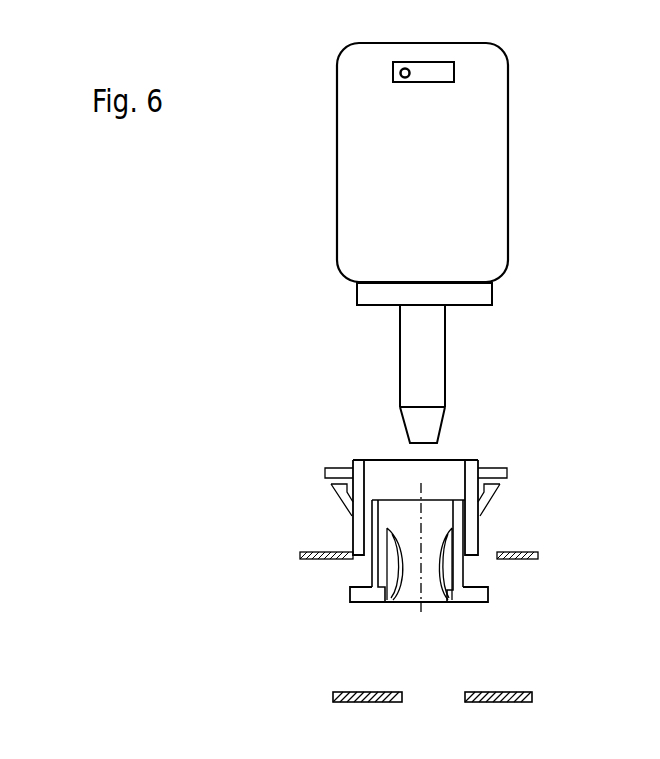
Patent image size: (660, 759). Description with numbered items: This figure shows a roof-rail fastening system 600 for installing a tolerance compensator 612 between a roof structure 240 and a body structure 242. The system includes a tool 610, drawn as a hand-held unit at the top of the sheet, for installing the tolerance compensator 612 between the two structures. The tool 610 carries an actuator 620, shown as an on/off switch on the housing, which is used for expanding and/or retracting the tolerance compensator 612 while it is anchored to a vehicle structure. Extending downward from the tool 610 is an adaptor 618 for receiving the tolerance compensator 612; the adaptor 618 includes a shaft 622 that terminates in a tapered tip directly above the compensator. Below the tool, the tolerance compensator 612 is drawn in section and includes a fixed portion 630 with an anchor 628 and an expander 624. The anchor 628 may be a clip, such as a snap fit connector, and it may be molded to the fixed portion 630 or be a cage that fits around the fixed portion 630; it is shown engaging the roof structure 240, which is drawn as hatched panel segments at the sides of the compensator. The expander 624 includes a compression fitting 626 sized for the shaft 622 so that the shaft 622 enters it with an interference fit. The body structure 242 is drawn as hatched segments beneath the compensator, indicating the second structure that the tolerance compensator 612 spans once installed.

The system for installing a tolerance compensator 600 is at (205, 224).
The tool 610 is at (485, 165).
The tolerance compensator 612 is at (512, 457).
The adaptor 618 is at (438, 342).
The actuator 620 is at (454, 67).
The shaft 622 is at (412, 375).
The expander 624 is at (470, 573).
The compression fitting 626 is at (443, 587).
The anchor 628 is at (487, 500).
The fixed portion 630 is at (354, 462).
The roof structure 240 is at (297, 560).
The body structure 242 is at (333, 697).